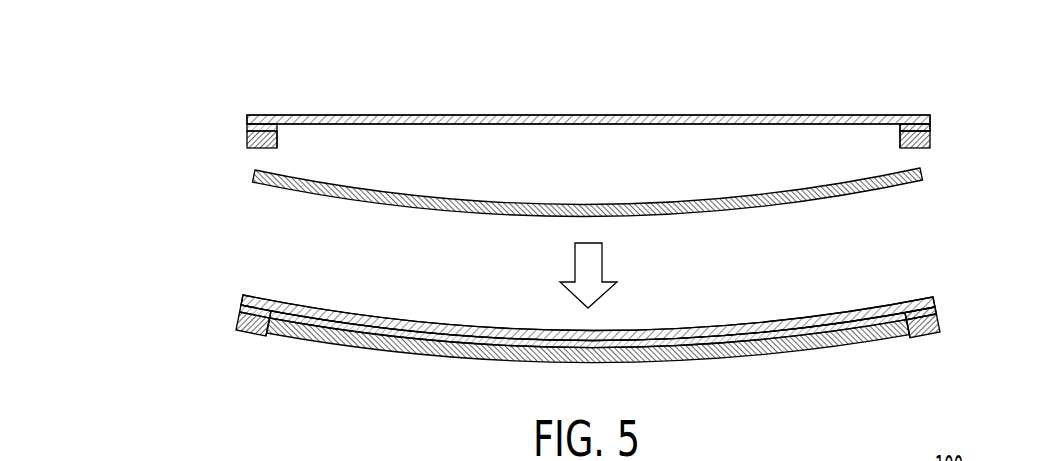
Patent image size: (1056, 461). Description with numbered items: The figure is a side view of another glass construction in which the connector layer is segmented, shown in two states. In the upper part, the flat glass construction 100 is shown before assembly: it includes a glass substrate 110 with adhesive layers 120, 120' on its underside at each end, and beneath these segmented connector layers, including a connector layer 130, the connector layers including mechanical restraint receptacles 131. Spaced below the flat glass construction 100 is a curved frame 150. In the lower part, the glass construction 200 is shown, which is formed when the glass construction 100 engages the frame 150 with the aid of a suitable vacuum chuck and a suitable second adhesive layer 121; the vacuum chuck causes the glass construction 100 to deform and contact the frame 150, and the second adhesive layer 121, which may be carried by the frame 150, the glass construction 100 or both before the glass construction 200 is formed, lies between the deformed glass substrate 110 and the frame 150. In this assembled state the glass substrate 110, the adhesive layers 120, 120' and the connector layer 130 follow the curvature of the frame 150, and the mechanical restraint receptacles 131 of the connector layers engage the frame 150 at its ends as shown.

The glass construction 100 is at (672, 94).
The glass construction 200 is at (780, 298).
The glass substrate 110 is at (258, 116).
The adhesive layer 120 is at (918, 222).
The adhesive layer 120' is at (950, 206).
The second adhesive layer 121 is at (790, 344).
The connector layer 130 is at (930, 140).
The mechanical restraint receptacle 131 is at (898, 140).
The frame 150 is at (922, 173).